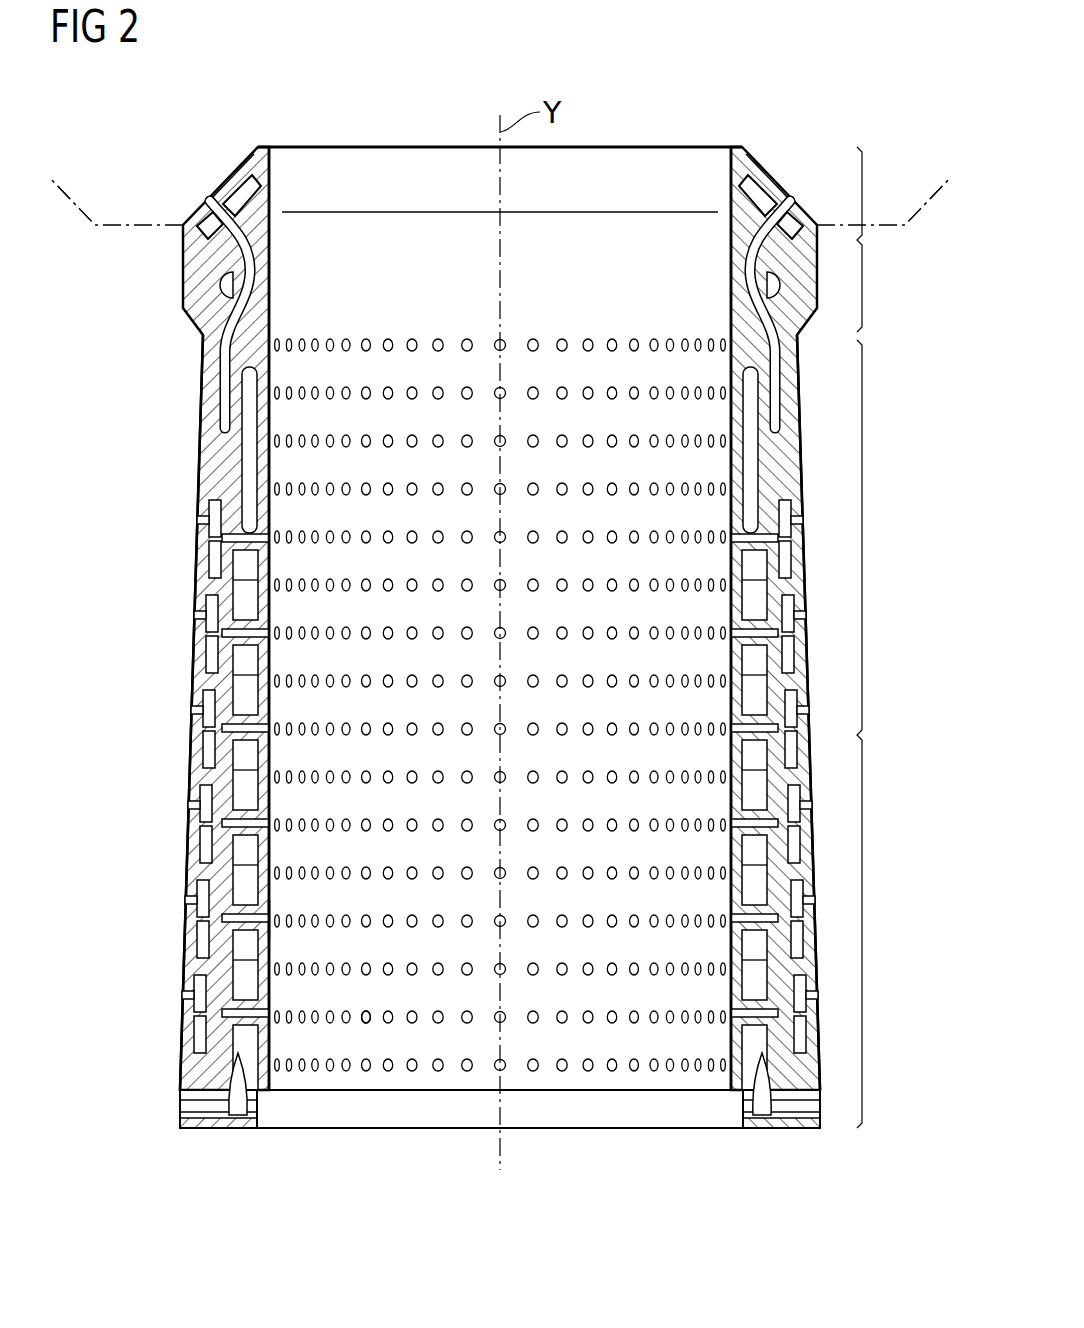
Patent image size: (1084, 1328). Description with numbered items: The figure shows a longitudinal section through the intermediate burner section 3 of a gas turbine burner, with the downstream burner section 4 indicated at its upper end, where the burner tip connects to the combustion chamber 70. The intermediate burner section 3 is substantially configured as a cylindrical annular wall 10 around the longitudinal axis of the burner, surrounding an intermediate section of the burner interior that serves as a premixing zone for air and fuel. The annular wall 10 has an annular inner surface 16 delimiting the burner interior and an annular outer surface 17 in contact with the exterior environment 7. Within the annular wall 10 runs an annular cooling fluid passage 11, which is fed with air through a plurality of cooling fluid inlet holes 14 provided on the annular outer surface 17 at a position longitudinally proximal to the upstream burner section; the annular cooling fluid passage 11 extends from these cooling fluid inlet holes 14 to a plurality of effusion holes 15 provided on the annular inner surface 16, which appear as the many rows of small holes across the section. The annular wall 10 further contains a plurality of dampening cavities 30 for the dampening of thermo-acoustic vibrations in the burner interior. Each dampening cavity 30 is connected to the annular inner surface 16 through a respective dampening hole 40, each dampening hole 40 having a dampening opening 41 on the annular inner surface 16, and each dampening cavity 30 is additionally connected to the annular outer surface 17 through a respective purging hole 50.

The intermediate burner section 3 is at (872, 734).
The downstream burner section 4 is at (871, 239).
The exterior environment 7 is at (96, 653).
The combustion chamber 70 is at (844, 118).
The annular wall 10 is at (188, 455).
The annular cooling fluid passage 11 is at (239, 1083).
The cooling fluid inlet holes 14 is at (174, 1108).
The effusion holes 15 is at (467, 1036).
The annular inner surface 16 is at (660, 1040).
The annular outer surface 17 is at (190, 760).
The dampening cavities 30 is at (215, 604).
The dampening hole 40 is at (242, 1018).
The dampening opening 41 is at (370, 1024).
The purging hole 50 is at (195, 711).